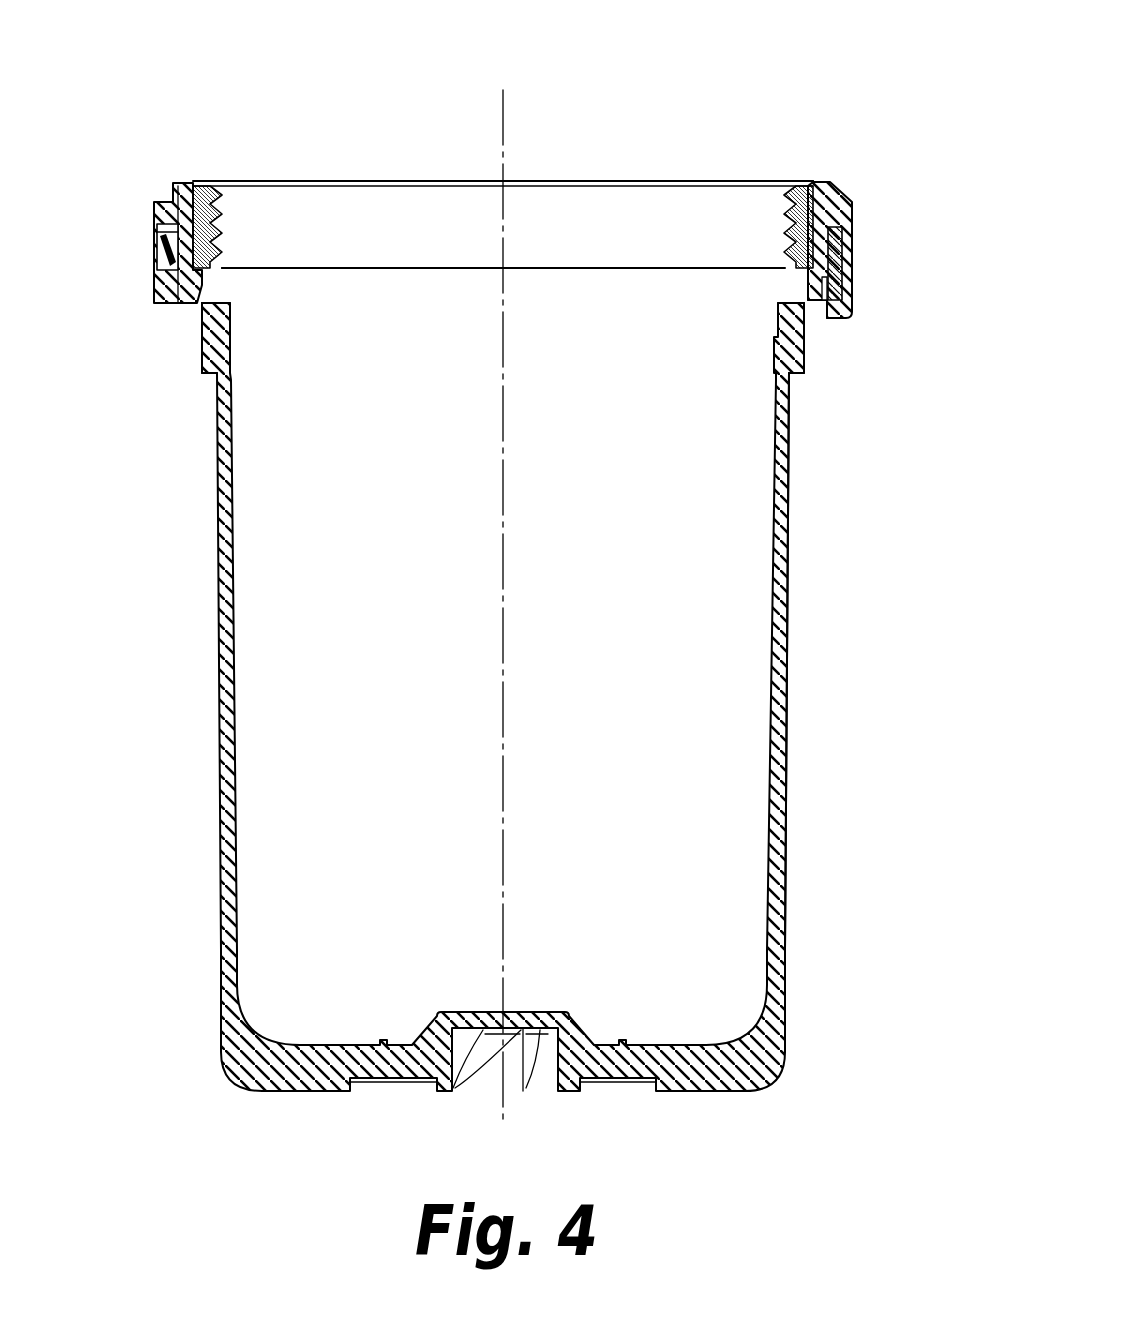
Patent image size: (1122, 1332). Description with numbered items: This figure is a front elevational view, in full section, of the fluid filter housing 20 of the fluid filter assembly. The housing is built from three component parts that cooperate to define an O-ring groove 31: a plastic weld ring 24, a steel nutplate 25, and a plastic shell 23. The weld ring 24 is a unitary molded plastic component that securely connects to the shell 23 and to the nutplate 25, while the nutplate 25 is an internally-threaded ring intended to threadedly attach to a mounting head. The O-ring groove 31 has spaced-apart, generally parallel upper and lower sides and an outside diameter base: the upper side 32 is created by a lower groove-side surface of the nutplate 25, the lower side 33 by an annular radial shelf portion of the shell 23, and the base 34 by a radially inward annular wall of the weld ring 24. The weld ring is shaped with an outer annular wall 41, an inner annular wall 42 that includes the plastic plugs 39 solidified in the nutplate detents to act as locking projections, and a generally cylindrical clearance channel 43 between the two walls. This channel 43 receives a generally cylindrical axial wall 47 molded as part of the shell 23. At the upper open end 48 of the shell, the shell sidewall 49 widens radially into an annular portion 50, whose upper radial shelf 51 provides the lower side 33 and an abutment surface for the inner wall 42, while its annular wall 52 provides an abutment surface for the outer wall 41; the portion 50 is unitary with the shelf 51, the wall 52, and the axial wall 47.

The fluid filter housing 20 is at (868, 146).
The plastic shell 23 is at (786, 730).
The plastic weld ring 24 is at (853, 205).
The steel nutplate 25 is at (797, 185).
The O-ring groove 31 is at (245, 283).
The upper side 32 is at (232, 270).
The lower side 33 is at (231, 296).
The base 34 is at (203, 335).
The plugs 39 is at (822, 182).
The outer annular wall 41 is at (156, 236).
The inner annular wall 42 is at (206, 188).
The clearance channel 43 is at (171, 303).
The axial wall 47 is at (852, 245).
The upper open end 48 is at (745, 290).
The shell sidewall 49 is at (787, 457).
The annular portion 50 is at (803, 345).
The radial shelf 51 is at (778, 304).
The annular wall 52 is at (850, 290).